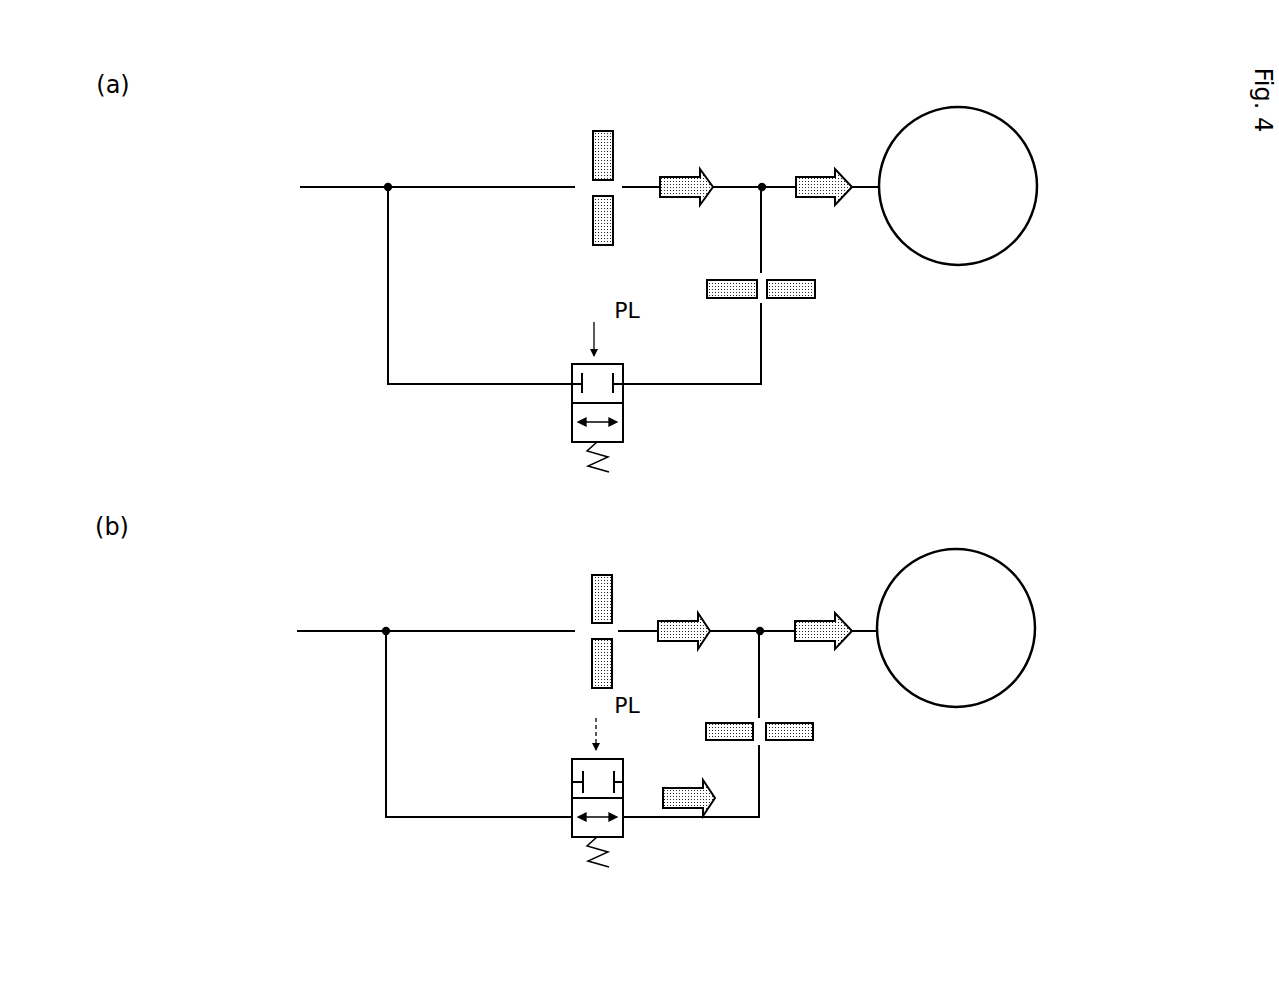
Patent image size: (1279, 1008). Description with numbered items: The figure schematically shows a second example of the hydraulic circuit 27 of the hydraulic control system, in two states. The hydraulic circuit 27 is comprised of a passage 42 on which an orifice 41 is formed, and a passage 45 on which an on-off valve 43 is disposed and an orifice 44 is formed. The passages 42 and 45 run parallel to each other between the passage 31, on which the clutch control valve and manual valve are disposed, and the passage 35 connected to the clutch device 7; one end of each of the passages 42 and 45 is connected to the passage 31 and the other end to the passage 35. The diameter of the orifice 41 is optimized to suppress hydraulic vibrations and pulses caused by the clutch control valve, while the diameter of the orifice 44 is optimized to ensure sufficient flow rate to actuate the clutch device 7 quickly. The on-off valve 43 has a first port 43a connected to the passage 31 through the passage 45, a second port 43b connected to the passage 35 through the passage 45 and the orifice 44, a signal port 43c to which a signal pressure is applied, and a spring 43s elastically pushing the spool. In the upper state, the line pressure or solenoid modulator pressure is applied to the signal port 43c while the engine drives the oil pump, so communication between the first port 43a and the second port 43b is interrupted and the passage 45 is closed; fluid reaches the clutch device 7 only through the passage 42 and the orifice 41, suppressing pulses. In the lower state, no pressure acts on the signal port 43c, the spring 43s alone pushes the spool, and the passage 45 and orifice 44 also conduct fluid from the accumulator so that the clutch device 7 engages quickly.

The clutch device 7 is at (960, 266).
The hydraulic circuit 27 is at (297, 146).
The passage 31 is at (317, 188).
The passage 35 is at (862, 184).
The orifice 41 is at (613, 145).
The passage 42 is at (462, 186).
The on-off valve 43 is at (572, 432).
The first port 43a is at (572, 385).
The second port 43b is at (625, 386).
The signal port 43c is at (591, 362).
The spring 43s is at (598, 455).
The orifice 44 is at (795, 298).
The passage 45 is at (418, 385).